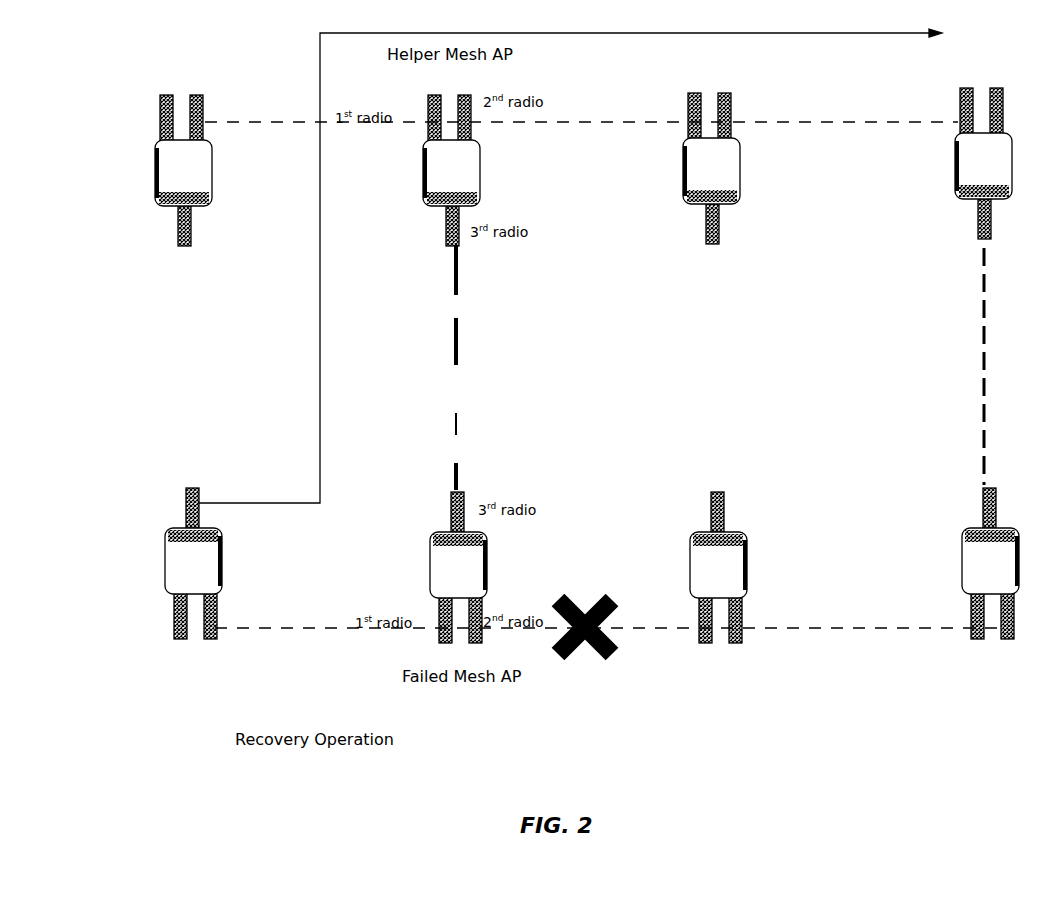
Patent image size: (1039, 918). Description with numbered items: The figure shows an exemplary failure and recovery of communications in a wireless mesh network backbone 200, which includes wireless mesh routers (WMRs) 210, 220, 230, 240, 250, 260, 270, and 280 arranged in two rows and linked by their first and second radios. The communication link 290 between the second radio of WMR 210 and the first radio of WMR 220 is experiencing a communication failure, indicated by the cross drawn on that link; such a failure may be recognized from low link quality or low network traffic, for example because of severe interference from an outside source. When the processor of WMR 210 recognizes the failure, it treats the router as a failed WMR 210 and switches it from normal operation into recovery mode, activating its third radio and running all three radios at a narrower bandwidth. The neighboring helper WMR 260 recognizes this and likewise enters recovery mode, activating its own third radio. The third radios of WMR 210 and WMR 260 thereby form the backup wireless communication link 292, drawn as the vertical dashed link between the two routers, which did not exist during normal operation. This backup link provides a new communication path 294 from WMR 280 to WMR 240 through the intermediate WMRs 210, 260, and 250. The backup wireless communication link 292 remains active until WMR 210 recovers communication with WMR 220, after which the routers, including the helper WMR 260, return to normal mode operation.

The wireless mesh network backbone 200 is at (217, 750).
The failed WMR 210 is at (487, 558).
The WMR 220 is at (747, 557).
The WMR 230 is at (962, 563).
The WMR 240 is at (955, 172).
The WMR 250 is at (740, 176).
The helper WMR 260 is at (480, 173).
The WMR 270 is at (212, 177).
The WMR 280 is at (222, 565).
The communication link 290 is at (642, 637).
The backup wireless communication link 292 is at (518, 367).
The new communication path 294 is at (772, 26).